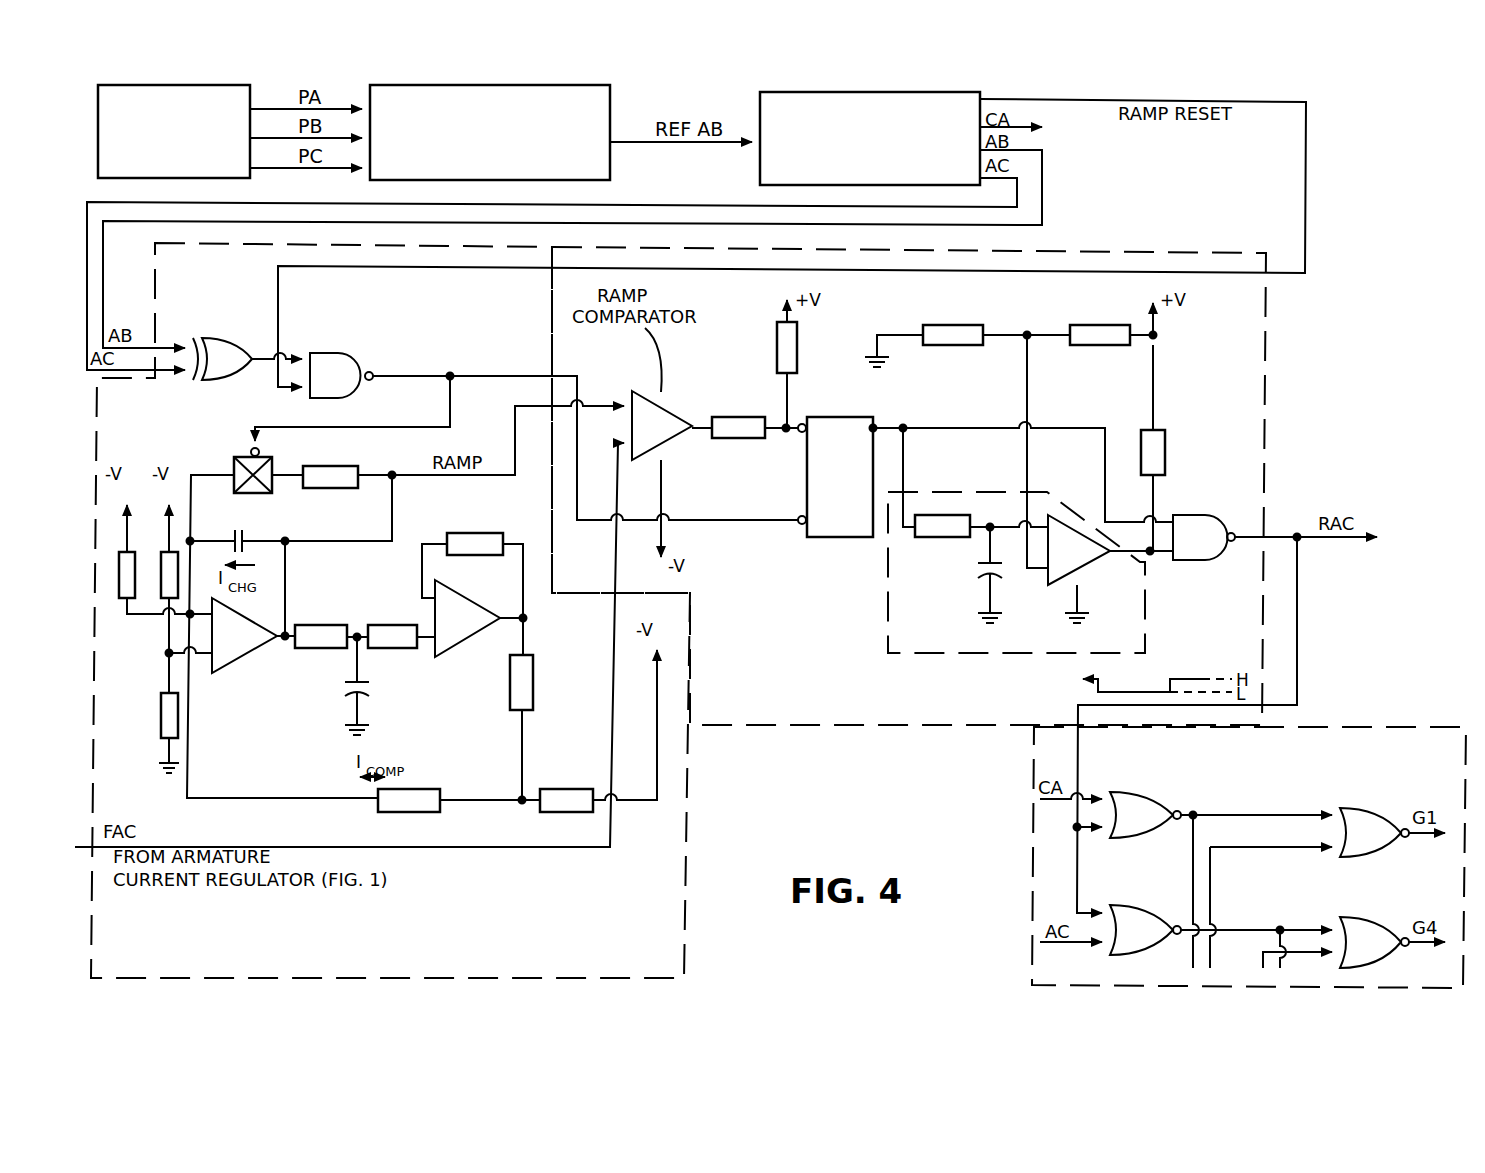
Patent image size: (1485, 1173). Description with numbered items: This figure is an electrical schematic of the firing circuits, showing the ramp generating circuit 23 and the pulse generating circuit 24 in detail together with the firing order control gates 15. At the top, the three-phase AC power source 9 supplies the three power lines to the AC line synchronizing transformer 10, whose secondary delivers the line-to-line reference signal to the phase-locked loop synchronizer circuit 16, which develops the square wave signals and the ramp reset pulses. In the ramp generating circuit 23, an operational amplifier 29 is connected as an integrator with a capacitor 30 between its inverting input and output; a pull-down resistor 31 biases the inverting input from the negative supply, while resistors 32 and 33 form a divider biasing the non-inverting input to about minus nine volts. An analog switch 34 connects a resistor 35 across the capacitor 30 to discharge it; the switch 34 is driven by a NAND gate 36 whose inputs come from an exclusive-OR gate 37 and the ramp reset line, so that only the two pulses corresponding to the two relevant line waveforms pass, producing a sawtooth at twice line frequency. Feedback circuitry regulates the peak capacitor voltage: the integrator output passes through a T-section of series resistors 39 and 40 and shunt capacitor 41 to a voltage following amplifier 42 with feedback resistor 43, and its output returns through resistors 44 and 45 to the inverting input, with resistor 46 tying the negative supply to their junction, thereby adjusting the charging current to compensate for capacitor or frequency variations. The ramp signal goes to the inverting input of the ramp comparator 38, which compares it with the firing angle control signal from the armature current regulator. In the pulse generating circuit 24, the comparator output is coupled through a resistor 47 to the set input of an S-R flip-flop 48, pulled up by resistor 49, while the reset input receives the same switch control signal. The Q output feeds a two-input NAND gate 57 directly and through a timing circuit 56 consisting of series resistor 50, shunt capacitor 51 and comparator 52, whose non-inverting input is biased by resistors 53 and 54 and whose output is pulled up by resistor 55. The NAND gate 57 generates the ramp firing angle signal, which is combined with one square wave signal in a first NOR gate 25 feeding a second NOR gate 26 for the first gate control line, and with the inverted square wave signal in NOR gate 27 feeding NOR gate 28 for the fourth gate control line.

The three-phase AC power source 9 is at (252, 86).
The AC line synchronizing transformer 10 is at (612, 88).
The firing order control gates 15 is at (1458, 768).
The phase-locked loop synchronizer circuit 16 is at (758, 100).
The ramp generating circuit 23 is at (656, 960).
The pulse generating circuit 24 is at (900, 710).
The first NOR gate 25 is at (1145, 838).
The second NOR gate 26 is at (1393, 850).
The NOR gate 27 is at (1135, 904).
The NOR gate 28 is at (1393, 956).
The operational amplifier 29 is at (252, 650).
The capacitor 30 is at (258, 535).
The pull-down resistor 31 is at (119, 600).
The resistor 32 is at (162, 550).
The resistor 33 is at (160, 713).
The analog switch 34 is at (238, 456).
The resistor 35 is at (342, 465).
The NAND gate 36 is at (360, 352).
The exclusive-OR gate 37 is at (230, 337).
The ramp comparator 38 is at (678, 440).
The series resistor 39 is at (318, 624).
The series resistor 40 is at (388, 624).
The shunt capacitor 41 is at (372, 690).
The voltage following amplifier 42 is at (463, 640).
The feedback resistor 43 is at (476, 532).
The resistor 44 is at (534, 675).
The resistor 45 is at (440, 788).
The resistor 46 is at (578, 788).
The resistor 47 is at (738, 416).
The S-R flip-flop 48 is at (842, 540).
The pull-up resistor 49 is at (800, 340).
The series resistor 50 is at (932, 538).
The shunt capacitor 51 is at (978, 585).
The comparator 52 is at (1090, 558).
The resistor 53 is at (1103, 324).
The resistor 54 is at (953, 324).
The pull-up resistor 55 is at (1170, 444).
The timing circuit 56 is at (962, 658).
The two-input NAND gate 57 is at (1205, 562).